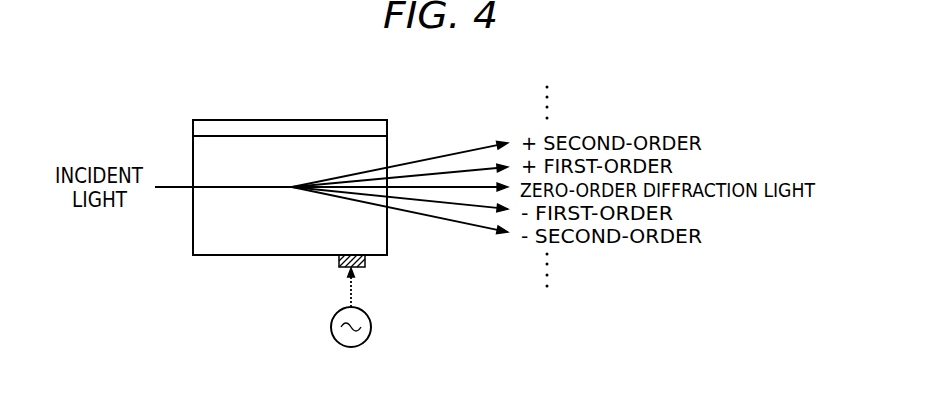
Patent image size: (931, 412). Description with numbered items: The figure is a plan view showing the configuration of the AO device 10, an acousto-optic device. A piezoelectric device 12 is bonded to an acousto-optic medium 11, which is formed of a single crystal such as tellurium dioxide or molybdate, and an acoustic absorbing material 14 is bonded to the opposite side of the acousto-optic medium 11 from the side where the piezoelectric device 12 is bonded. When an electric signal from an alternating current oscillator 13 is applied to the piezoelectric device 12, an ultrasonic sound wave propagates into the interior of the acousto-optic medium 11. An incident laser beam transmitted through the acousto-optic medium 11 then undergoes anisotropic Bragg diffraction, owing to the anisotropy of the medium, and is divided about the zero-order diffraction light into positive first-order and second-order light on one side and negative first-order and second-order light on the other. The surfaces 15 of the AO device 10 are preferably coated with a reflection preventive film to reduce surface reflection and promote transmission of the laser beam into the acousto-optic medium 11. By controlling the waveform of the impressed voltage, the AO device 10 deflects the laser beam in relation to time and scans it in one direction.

The AO device 10 is at (311, 190).
The acousto-optic medium 11 is at (197, 160).
The piezoelectric device 12 is at (366, 262).
The alternating current oscillator 13 is at (372, 327).
The acoustic absorbing material 14 is at (344, 127).
The surfaces 15 is at (245, 243).